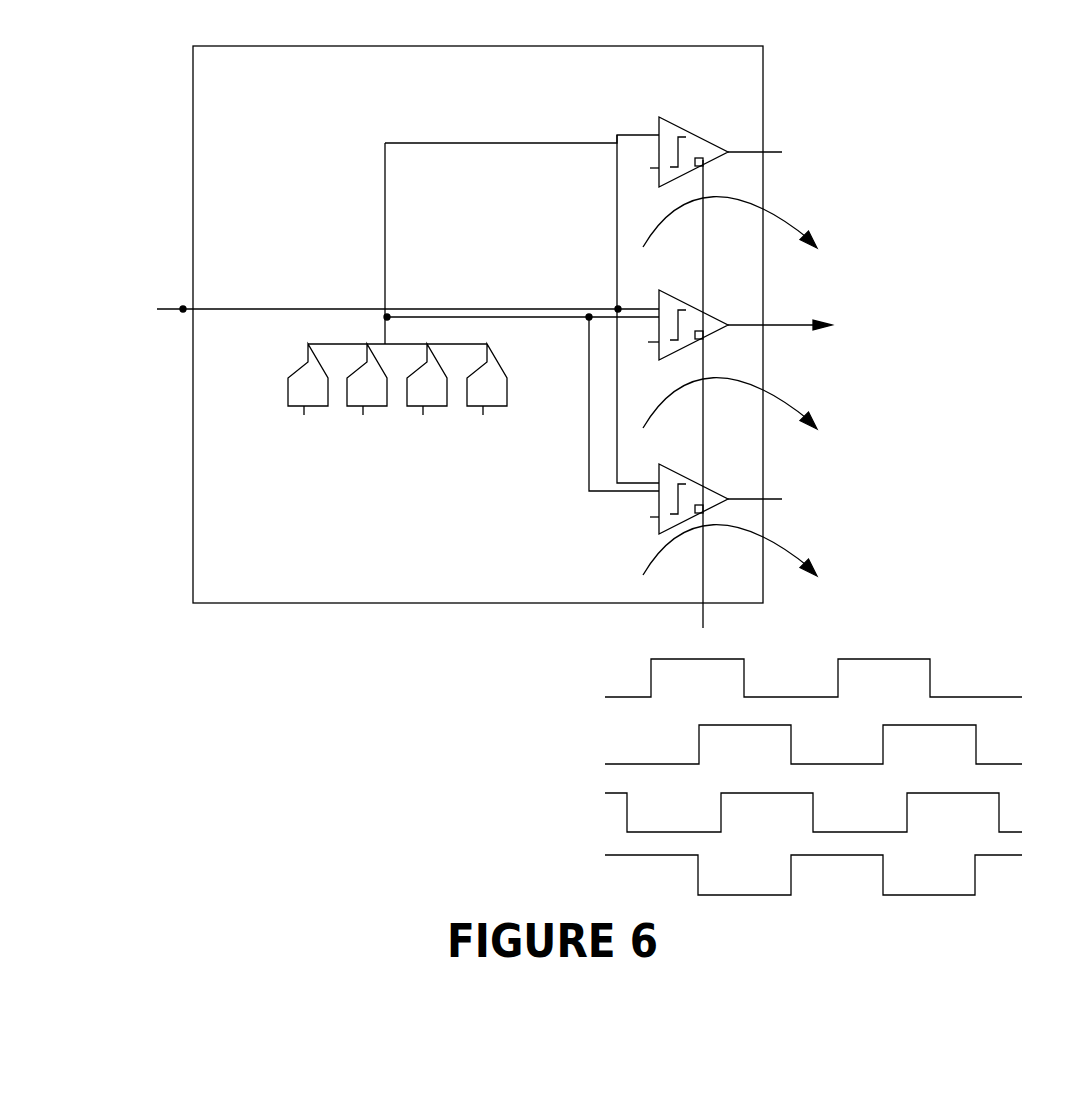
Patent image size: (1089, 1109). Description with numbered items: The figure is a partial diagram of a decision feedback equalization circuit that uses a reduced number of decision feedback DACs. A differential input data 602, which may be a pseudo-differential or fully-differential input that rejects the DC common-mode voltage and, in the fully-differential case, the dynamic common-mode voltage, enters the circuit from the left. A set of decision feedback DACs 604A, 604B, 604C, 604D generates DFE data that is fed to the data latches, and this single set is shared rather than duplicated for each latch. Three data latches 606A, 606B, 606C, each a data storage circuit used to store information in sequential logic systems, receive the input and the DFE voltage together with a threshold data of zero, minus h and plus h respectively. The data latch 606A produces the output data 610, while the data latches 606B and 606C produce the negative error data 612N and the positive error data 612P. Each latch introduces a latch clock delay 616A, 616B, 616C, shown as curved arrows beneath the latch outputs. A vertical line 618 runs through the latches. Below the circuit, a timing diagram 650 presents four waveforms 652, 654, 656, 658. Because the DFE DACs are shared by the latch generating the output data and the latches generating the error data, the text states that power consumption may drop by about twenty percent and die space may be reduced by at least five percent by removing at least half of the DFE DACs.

The differential input data 602 is at (165, 312).
The decision feedback DAC 604A is at (298, 398).
The decision feedback DAC 604B is at (358, 398).
The decision feedback DAC 604C is at (418, 398).
The decision feedback DAC 604D is at (478, 398).
The data latch 606A is at (703, 318).
The data latch 606B is at (702, 148).
The data latch 606C is at (703, 487).
The output data 610 is at (772, 325).
The negative error data 612N is at (750, 151).
The positive error data 612P is at (775, 500).
The latch clock delay 616A is at (765, 382).
The latch clock delay 616B is at (770, 200).
The latch clock delay 616C is at (790, 540).
The clock line 618 is at (705, 618).
The timing diagram 650 is at (843, 799).
The waveform 652 is at (1010, 697).
The waveform 654 is at (1010, 764).
The waveform 656 is at (1010, 832).
The waveform 658 is at (1010, 855).